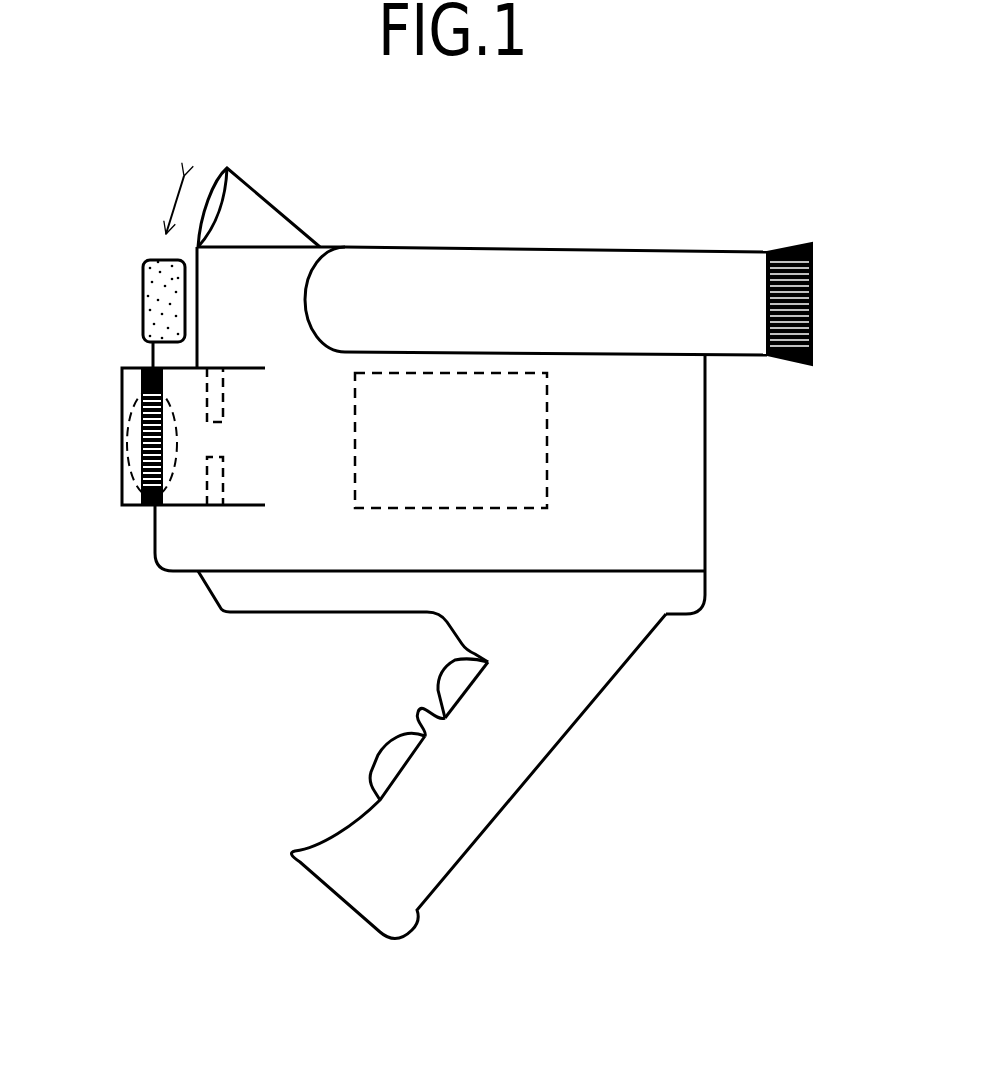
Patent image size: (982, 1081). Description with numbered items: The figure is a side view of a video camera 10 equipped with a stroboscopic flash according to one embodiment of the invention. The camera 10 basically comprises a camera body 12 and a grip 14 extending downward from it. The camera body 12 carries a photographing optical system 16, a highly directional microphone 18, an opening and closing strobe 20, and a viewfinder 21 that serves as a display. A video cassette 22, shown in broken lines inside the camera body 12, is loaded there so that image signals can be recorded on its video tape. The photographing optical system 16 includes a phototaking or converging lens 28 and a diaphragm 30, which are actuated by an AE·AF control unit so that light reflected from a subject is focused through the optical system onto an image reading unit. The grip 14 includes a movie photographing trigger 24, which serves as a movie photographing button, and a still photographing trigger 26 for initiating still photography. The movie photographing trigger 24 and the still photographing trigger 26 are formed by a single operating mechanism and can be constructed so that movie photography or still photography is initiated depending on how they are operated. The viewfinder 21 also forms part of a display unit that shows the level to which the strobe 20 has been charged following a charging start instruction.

The video camera 10 is at (748, 187).
The camera body 12 is at (676, 467).
The grip 14 is at (614, 688).
The photographing optical system 16 is at (119, 493).
The highly directional microphone 18 is at (158, 302).
The opening and closing strobe 20 is at (273, 231).
The viewfinder 21 is at (813, 298).
The video cassette 22 is at (523, 469).
The movie photographing trigger 24 is at (457, 685).
The still photographing trigger 26 is at (390, 762).
The converging lens 28 is at (130, 455).
The diaphragm 30 is at (218, 473).